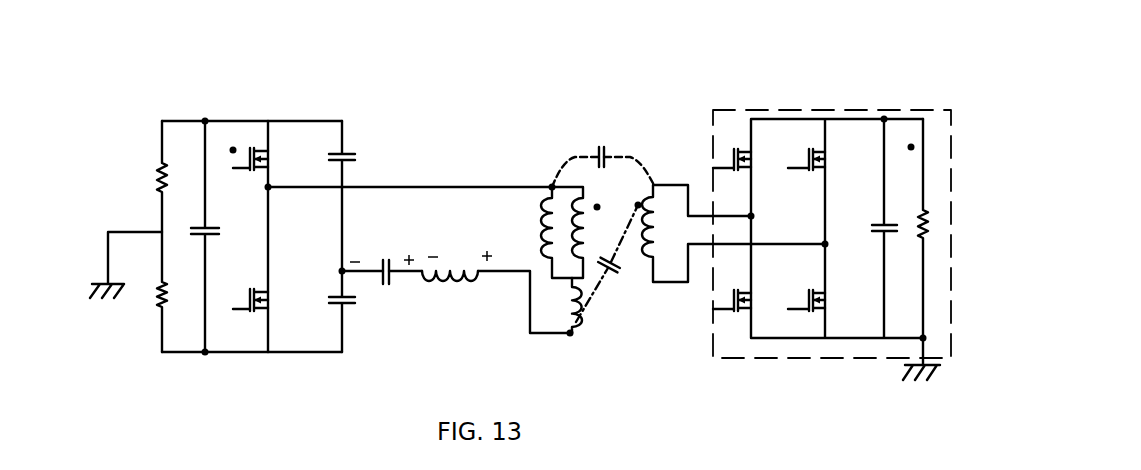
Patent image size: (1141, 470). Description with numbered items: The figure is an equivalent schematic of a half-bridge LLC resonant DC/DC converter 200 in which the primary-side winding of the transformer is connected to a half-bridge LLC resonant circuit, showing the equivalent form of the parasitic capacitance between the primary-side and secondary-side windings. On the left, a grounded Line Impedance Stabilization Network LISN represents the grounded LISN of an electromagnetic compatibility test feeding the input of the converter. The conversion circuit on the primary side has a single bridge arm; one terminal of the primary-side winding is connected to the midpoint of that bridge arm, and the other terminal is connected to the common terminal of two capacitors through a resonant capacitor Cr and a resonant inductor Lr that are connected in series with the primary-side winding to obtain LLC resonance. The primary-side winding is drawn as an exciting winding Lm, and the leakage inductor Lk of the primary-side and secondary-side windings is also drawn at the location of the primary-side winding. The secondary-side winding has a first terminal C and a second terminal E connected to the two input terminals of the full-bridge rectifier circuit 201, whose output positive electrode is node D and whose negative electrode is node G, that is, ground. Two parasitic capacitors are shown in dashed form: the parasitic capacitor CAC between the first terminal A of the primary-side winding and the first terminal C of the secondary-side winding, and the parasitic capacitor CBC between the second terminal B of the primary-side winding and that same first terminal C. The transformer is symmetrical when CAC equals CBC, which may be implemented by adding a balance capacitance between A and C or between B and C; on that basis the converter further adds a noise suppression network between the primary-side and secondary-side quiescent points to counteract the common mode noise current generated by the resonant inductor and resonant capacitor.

The DC/DC converter 200 is at (87, 116).
The full-bridge rectifier circuit 201 is at (754, 103).
The Line Impedance Stabilization Network LISN is at (133, 236).
The resonant capacitor Cr is at (386, 258).
The resonant inductor Lr is at (450, 257).
The exciting winding Lm is at (554, 232).
The leakage inductor Lk is at (559, 305).
The parasitic capacitor CAC is at (603, 146).
The parasitic capacitor CBC is at (608, 263).